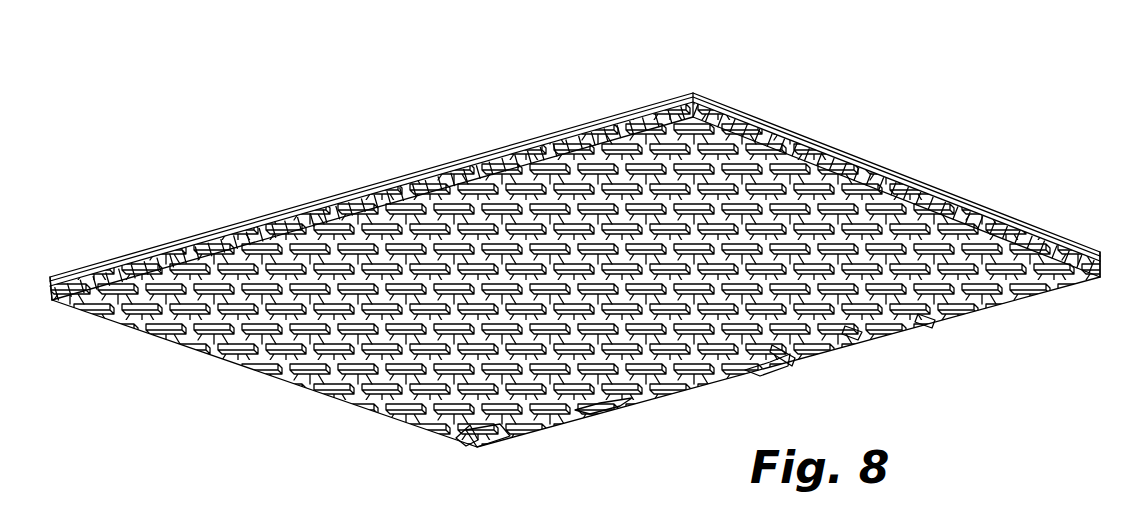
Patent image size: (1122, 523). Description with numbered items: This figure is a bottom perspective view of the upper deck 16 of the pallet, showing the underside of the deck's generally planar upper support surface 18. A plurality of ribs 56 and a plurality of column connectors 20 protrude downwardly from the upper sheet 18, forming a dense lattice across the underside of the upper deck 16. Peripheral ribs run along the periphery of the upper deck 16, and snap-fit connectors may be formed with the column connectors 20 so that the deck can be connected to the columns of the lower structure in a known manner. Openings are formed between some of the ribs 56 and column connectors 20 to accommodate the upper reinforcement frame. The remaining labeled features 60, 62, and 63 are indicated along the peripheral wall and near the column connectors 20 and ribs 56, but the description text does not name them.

The upper deck 16 is at (842, 44).
The upper support surface 18 is at (363, 187).
The column connectors 20 is at (507, 442).
The ribs 56 is at (637, 397).
The side wall columns 60 is at (583, 125).
The leg base 62 is at (470, 427).
The cross ribs 63 is at (853, 332).